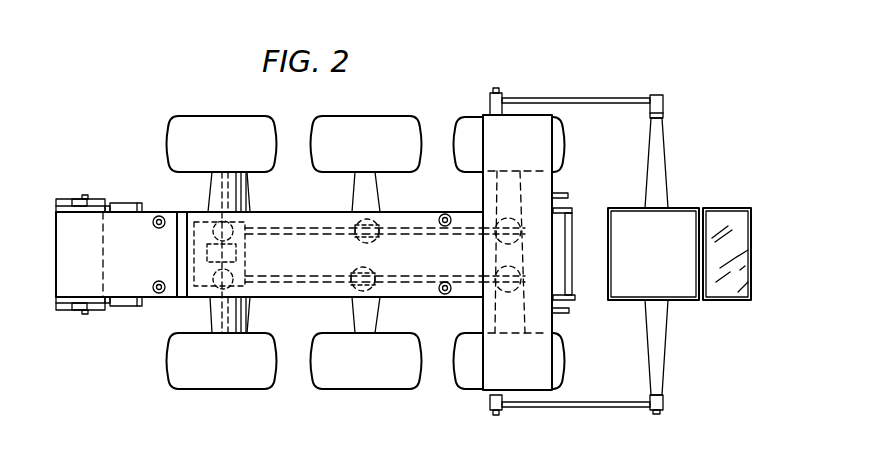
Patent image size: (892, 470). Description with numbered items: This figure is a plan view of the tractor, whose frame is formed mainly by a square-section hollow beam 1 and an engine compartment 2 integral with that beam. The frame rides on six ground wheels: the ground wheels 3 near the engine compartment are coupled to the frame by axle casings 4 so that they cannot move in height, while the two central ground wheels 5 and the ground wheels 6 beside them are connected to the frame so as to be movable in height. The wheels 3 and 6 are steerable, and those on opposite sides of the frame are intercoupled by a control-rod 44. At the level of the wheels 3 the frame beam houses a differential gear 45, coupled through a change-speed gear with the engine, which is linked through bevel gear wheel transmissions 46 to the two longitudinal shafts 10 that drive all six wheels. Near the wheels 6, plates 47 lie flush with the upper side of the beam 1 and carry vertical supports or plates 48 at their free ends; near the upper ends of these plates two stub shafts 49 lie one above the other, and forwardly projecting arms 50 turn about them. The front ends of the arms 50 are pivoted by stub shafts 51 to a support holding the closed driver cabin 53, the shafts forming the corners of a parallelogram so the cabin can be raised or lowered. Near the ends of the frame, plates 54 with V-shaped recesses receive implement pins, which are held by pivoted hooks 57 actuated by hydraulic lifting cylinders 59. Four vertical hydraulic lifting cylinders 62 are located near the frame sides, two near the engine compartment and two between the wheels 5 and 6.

The square-section hollow beam 1 is at (304, 298).
The engine compartment 2 is at (154, 211).
The ground wheels 3 is at (200, 118).
The axle casings 4 is at (210, 315).
The central ground wheels 5 is at (396, 118).
The ground wheels 6 is at (462, 122).
The shaft 10 is at (408, 236).
The control-rod 44 is at (248, 316).
The differential gear 45 is at (240, 250).
The bevel gear wheel transmissions 46 is at (262, 212).
The plates 47 is at (553, 190).
The vertical supports or plates 48 is at (540, 121).
The stub shafts 49 is at (496, 91).
The forwardly projecting arms 50 is at (575, 97).
The stub shafts 51 is at (658, 92).
The closed driver cabin 53 is at (690, 208).
The plates 54 is at (66, 214).
The hooks 57 is at (76, 198).
The hydraulic lifting cylinder 59 is at (122, 203).
The vertical hydraulic lifting cylinders 62 is at (159, 229).